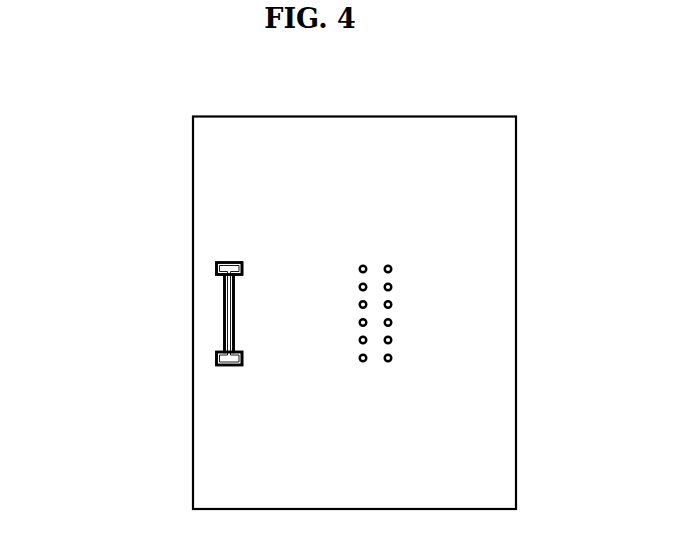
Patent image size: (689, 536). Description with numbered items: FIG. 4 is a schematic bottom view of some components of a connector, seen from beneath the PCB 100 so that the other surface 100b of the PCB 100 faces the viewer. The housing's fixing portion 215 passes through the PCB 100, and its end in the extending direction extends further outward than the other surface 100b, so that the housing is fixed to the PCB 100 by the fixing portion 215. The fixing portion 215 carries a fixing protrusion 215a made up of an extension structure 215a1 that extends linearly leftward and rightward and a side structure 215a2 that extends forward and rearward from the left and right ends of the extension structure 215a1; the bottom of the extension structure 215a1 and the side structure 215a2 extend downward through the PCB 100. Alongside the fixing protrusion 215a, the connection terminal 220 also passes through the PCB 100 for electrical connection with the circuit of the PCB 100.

The PCB 100 is at (463, 128).
The other surface 100b is at (452, 425).
The fixing portion 215 is at (243, 304).
The fixing protrusion 215a is at (107, 258).
The extension structure 215a1 is at (225, 312).
The side structure 215a2 is at (216, 267).
The connection terminal 220 is at (391, 268).